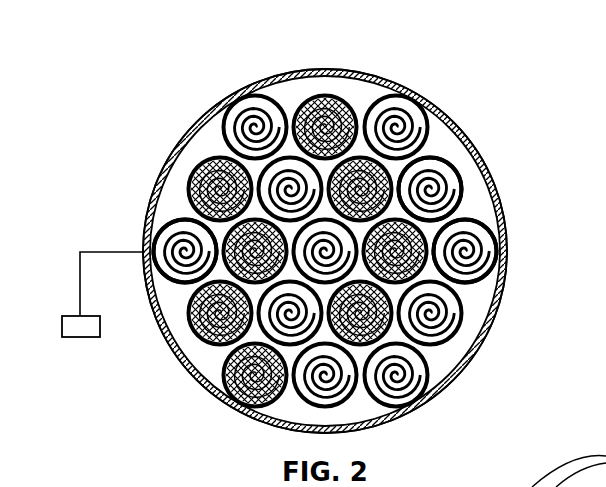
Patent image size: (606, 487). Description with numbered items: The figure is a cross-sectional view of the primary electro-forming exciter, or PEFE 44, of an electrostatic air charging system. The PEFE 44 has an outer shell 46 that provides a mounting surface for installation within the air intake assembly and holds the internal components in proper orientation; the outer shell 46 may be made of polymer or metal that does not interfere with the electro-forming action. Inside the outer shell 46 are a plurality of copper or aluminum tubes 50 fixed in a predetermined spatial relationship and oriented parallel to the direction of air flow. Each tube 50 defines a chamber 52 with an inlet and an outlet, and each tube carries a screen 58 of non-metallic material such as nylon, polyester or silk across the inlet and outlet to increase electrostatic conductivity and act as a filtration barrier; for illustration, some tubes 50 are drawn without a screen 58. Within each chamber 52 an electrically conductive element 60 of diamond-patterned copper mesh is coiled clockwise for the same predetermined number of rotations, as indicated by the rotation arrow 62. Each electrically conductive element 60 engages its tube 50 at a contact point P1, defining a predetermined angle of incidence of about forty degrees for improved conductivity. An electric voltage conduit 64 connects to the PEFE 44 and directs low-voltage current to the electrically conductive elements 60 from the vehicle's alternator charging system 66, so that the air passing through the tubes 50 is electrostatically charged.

The primary electro-forming exciter 44 is at (323, 226).
The outer shell 46 is at (154, 190).
The tubes 50 is at (270, 94).
The chamber 52 is at (233, 95).
The screen 58 is at (188, 332).
The electrically conductive elements 60 is at (163, 227).
The direction arrow 62 is at (436, 371).
The electric voltage conduit 64 is at (74, 282).
The alternator charging system 66 is at (80, 343).
The contact point P1 is at (500, 237).